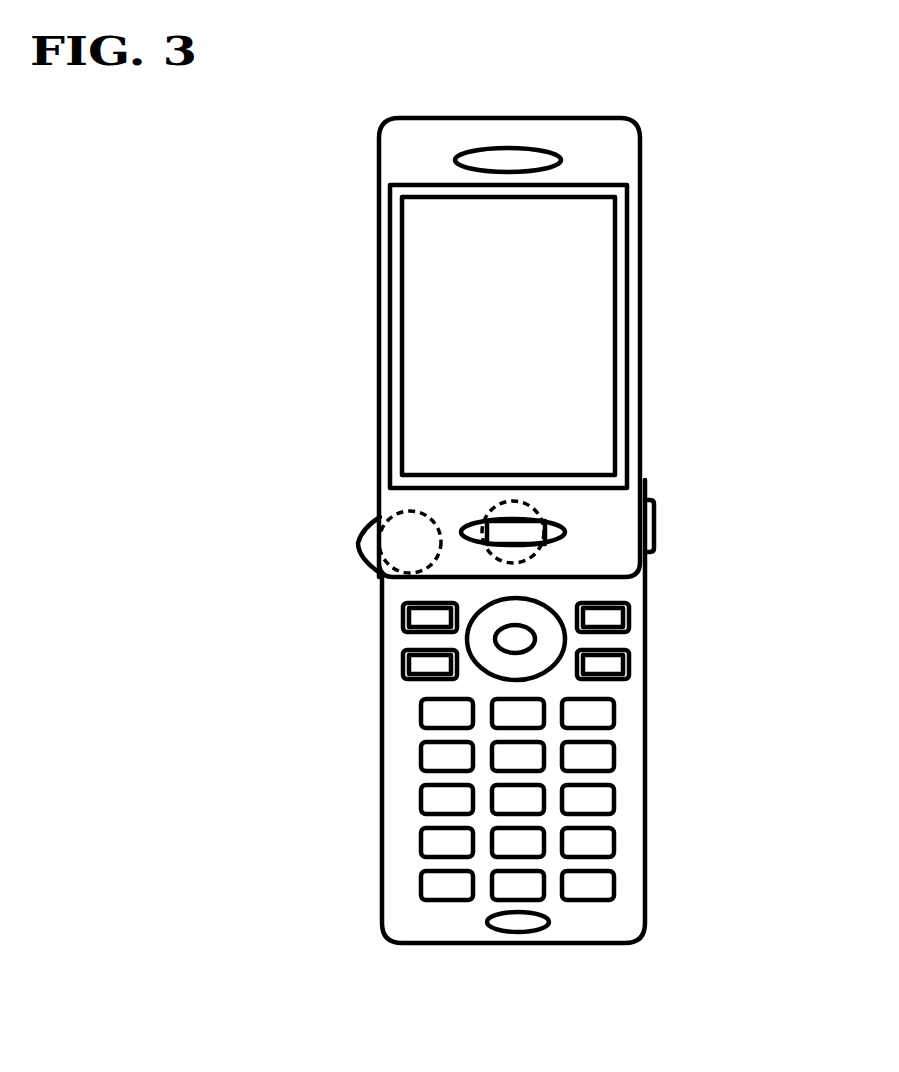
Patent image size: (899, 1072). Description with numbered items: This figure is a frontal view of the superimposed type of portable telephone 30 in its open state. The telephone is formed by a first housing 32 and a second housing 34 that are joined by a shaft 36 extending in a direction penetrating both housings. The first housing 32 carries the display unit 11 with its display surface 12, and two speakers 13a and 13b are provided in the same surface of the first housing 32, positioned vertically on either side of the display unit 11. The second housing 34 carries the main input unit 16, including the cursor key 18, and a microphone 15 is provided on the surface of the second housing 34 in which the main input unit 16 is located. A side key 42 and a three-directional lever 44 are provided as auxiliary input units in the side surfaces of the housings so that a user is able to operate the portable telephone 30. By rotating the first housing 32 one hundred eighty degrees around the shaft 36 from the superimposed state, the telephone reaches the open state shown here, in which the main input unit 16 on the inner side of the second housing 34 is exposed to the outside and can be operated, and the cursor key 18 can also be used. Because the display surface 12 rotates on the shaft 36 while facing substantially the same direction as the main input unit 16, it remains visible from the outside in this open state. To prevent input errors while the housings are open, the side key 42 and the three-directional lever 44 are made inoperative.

The superimposed type of portable telephone 30 is at (303, 690).
The first housing 32 is at (379, 300).
The second housing 34 is at (382, 838).
The speaker 13a is at (499, 148).
The display surface 12 is at (593, 290).
The display unit 11 is at (600, 336).
The shaft 36 is at (480, 518).
The speaker 13b is at (565, 530).
The 3-directional lever 44 is at (356, 548).
The side key 42 is at (654, 524).
The cursor key 18 is at (530, 627).
The main input unit 16 is at (681, 602).
The microphone 15 is at (524, 932).